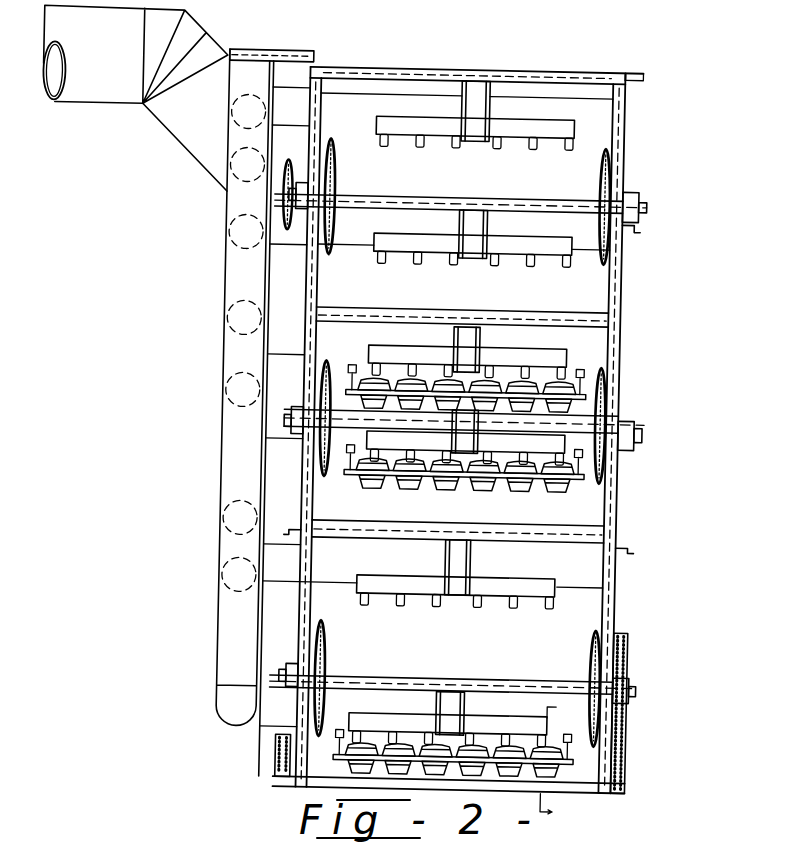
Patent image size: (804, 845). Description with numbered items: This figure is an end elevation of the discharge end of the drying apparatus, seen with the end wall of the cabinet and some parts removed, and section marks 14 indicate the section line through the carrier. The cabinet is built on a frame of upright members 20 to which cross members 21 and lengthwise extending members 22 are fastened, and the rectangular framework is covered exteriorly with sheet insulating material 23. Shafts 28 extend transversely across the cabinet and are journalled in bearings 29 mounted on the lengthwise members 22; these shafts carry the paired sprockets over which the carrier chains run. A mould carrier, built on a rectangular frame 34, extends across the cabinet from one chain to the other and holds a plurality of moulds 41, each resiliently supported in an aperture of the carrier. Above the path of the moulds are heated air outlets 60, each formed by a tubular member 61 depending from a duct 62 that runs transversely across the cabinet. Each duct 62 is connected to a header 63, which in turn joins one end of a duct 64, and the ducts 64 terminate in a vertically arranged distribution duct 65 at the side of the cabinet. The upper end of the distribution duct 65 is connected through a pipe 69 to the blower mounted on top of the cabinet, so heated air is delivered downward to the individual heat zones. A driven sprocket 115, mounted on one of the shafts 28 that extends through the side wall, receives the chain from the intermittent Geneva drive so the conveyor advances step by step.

The section line 14 is at (562, 761).
The upright members 20 is at (620, 273).
The cross members 21 is at (566, 80).
The lengthwise extending members 22 is at (281, 527).
The sheet insulating material 23 is at (282, 758).
The shafts 28 is at (645, 207).
The bearings 29 is at (634, 197).
The rectangular frame 34 is at (588, 398).
The mould 41 is at (371, 482).
The outlets 60 is at (374, 146).
The tubular member 61 is at (403, 604).
The duct 62 is at (531, 122).
The header 63 is at (460, 596).
The duct 64 is at (437, 340).
The distribution duct 65 is at (222, 294).
The pipe 69 is at (136, 98).
The driven sprocket 115 is at (289, 242).